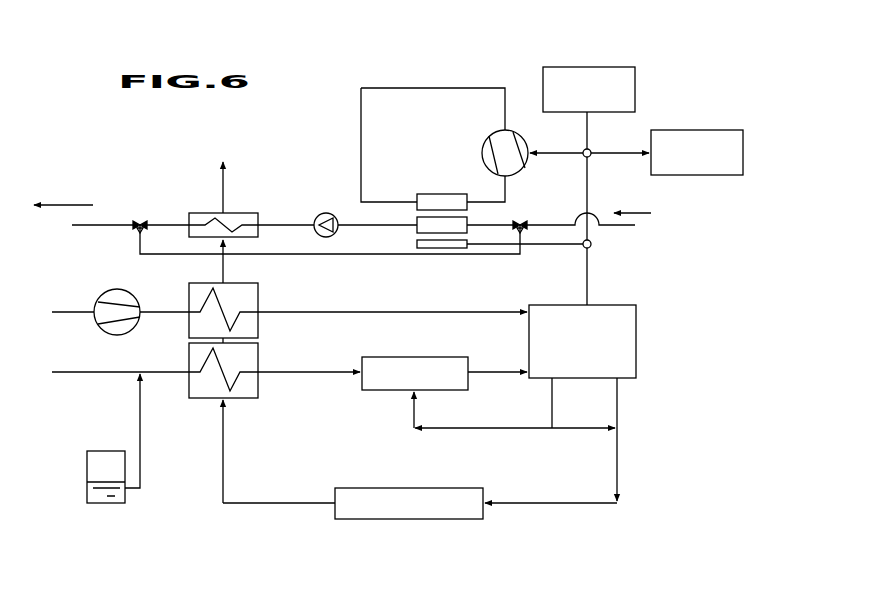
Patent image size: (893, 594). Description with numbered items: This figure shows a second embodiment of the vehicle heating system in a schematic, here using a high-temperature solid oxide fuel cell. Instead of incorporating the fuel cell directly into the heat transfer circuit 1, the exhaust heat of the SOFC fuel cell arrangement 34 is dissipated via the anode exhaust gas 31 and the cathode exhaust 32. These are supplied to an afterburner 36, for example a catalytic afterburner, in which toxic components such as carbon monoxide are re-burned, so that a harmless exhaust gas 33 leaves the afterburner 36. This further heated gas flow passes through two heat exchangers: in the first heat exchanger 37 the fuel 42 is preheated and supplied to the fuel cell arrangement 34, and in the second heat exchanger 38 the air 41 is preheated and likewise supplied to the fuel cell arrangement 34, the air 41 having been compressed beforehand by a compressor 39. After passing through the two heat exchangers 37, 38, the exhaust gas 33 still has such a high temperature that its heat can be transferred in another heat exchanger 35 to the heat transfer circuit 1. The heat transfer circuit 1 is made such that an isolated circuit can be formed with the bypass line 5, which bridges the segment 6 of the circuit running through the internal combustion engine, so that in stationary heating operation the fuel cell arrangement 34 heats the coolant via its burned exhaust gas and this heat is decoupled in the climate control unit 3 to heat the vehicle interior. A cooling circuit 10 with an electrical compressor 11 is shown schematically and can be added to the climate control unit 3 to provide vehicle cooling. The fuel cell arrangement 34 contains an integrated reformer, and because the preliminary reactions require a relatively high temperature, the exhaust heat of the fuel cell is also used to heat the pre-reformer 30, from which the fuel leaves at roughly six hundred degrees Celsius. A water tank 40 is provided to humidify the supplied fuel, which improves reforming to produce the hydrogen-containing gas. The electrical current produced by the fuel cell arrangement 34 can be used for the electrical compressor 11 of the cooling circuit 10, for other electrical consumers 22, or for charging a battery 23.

The heat transfer circuit 1 is at (296, 225).
The climate control unit 3 is at (430, 184).
The bypass line 5 is at (380, 257).
The segment of the heat transfer circuit 6 is at (106, 225).
The cooling circuit 10 is at (448, 88).
The electrical compressor 11 is at (488, 136).
The electrical consumers 22 is at (596, 66).
The battery 23 is at (743, 153).
The pre-reformer 30 is at (366, 357).
The anode exhaust gas 31 is at (552, 403).
The cathode exhaust 32 is at (617, 400).
The exhaust gas 33 is at (255, 503).
The SOFC fuel cell arrangement 34 is at (636, 340).
The heat exchanger 35 is at (246, 213).
The afterburner 36 is at (390, 520).
The first heat exchanger 37 is at (248, 398).
The second heat exchanger 38 is at (258, 298).
The compressor 39 is at (100, 300).
The water tank 40 is at (87, 468).
The air 41 is at (72, 312).
The fuel 42 is at (76, 372).